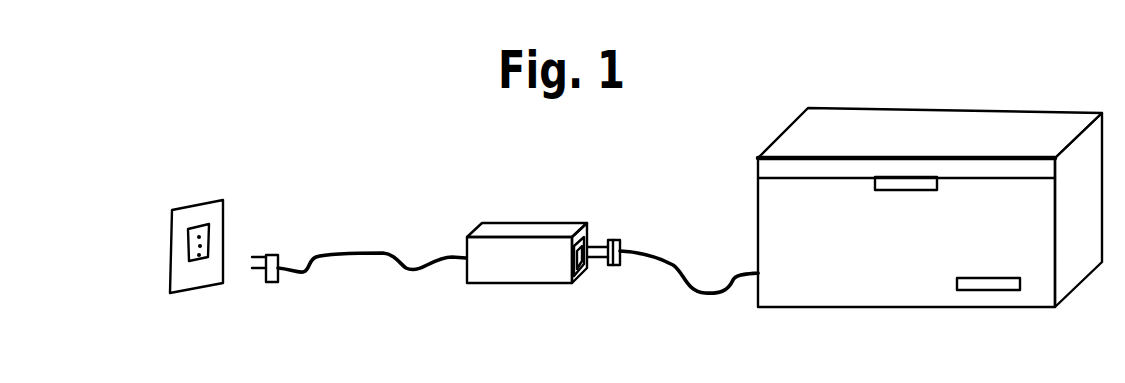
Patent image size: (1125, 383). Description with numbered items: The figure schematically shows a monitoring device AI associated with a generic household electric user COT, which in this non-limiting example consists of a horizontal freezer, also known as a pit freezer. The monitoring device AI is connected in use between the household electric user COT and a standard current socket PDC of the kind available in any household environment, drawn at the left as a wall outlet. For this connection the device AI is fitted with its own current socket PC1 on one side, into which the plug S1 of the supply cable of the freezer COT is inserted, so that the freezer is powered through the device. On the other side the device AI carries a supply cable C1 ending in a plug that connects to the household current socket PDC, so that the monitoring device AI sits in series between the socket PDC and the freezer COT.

The household current socket PDC is at (198, 221).
The supply cable C1 is at (420, 268).
The monitoring device AI is at (527, 231).
The current socket PC1 is at (585, 263).
The plug S1 is at (673, 265).
The household electric user COT is at (930, 186).